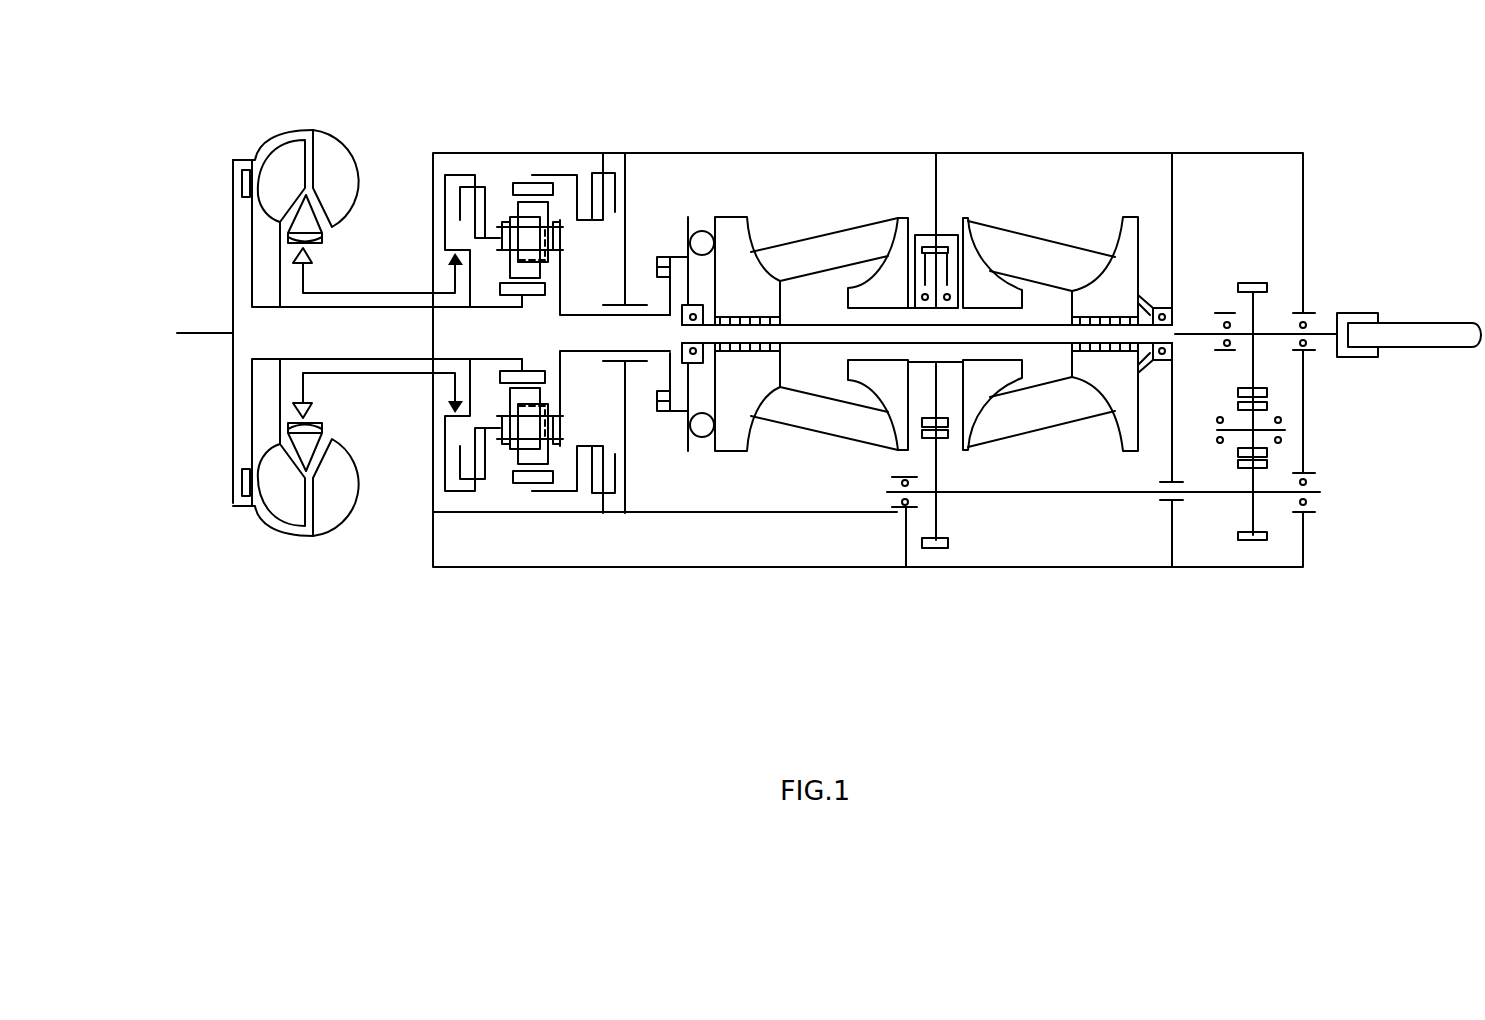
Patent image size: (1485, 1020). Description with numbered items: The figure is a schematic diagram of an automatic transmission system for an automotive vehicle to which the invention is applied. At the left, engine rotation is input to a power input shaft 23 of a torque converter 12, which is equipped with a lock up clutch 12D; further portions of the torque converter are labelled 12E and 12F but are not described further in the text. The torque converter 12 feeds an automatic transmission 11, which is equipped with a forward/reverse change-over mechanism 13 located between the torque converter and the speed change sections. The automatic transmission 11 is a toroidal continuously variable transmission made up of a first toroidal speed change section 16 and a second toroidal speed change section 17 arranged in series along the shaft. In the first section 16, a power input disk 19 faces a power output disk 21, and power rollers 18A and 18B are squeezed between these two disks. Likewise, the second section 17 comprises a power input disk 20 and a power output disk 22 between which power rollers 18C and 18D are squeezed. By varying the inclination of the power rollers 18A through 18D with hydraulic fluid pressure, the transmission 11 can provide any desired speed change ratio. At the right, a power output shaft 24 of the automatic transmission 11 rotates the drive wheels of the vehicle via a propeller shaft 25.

The automatic transmission 11 is at (947, 86).
The torque converter 12 is at (301, 113).
The lock up clutch 12D is at (243, 188).
The pump housing portion 12E is at (260, 382).
The pump housing portion 12F is at (238, 425).
The forward/reverse change-over mechanism 13 is at (505, 163).
The first toroidal speed change section 16 is at (779, 196).
The second toroidal speed change section 17 is at (1076, 362).
The power roller 18A is at (870, 220).
The power roller 18B is at (860, 430).
The power roller 18C is at (1078, 248).
The power roller 18D is at (1017, 425).
The power input disk 19 is at (728, 215).
The power input disk 20 is at (1132, 213).
The power output disk 21 is at (907, 227).
The power output disk 22 is at (965, 217).
The power input shaft 23 is at (205, 332).
The power output shaft 24 is at (1322, 330).
The propeller shaft 25 is at (1428, 323).